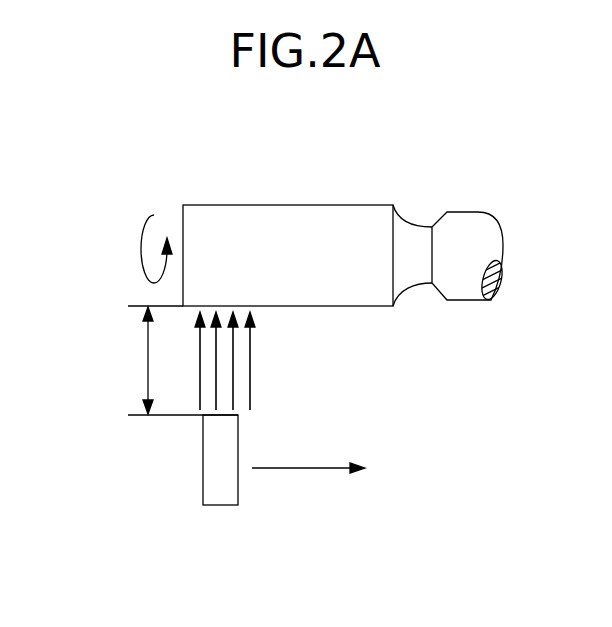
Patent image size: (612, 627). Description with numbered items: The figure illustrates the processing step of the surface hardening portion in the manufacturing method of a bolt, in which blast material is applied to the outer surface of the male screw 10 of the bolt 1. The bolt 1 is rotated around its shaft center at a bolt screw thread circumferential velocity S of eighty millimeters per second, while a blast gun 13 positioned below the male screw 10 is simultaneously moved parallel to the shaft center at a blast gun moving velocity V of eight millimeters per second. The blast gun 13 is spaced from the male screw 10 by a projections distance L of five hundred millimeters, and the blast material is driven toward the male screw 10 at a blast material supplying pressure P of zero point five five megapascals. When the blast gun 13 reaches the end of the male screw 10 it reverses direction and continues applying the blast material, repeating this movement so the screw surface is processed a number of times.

The bolt 1 is at (258, 196).
The male screw 10 is at (342, 218).
The blast gun 13 is at (220, 505).
The bolt screw thread circumferential velocity S is at (141, 250).
The projections distance L is at (147, 363).
The blast material supplying pressure P is at (252, 370).
The blast gun moving velocity V is at (304, 470).